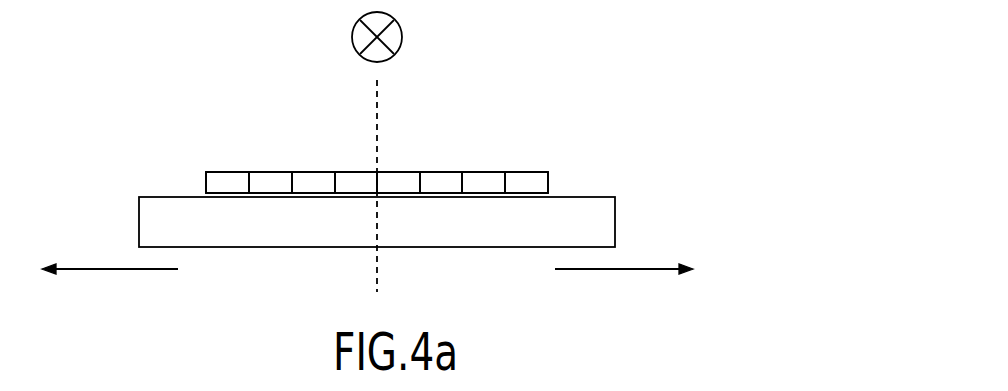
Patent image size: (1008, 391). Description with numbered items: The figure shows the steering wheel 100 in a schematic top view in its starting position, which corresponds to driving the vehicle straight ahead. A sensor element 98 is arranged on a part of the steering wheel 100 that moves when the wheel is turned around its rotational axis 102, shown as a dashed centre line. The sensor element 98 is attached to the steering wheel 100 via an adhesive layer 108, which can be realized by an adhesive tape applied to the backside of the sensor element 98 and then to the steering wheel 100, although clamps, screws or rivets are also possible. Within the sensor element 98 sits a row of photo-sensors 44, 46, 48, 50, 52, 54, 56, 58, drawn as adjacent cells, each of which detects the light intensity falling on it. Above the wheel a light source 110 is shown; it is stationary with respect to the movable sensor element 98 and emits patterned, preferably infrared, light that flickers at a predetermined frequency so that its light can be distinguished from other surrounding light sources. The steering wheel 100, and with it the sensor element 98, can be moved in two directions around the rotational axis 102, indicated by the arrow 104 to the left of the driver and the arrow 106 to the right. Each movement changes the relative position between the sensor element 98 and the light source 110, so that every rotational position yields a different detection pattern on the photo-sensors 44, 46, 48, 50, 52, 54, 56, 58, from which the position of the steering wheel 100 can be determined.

The photo-sensor 44 is at (220, 180).
The photo-sensor 46 is at (265, 180).
The photo-sensor 48 is at (303, 180).
The photo-sensor 50 is at (353, 180).
The photo-sensor 52 is at (393, 180).
The photo-sensor 54 is at (438, 180).
The photo-sensor 56 is at (485, 180).
The photo-sensor 58 is at (527, 180).
The sensor element 98 is at (322, 172).
The steering wheel 100 is at (593, 223).
The rotational axis 102 is at (378, 262).
The arrow 104 is at (97, 269).
The arrow 106 is at (655, 269).
The adhesive layer 108 is at (208, 197).
The light source 110 is at (402, 32).